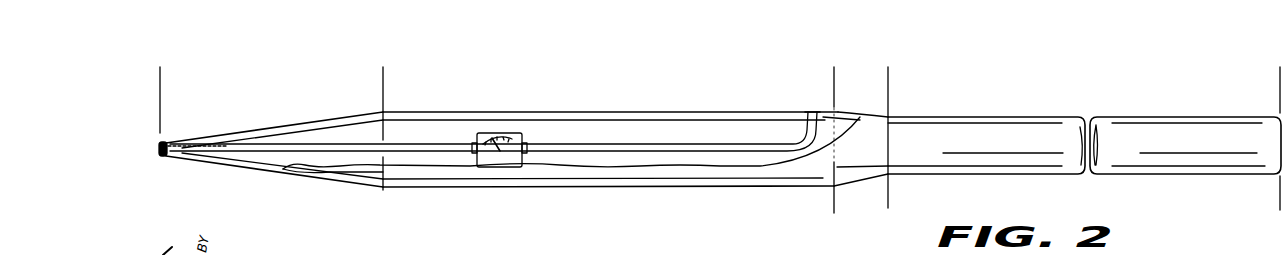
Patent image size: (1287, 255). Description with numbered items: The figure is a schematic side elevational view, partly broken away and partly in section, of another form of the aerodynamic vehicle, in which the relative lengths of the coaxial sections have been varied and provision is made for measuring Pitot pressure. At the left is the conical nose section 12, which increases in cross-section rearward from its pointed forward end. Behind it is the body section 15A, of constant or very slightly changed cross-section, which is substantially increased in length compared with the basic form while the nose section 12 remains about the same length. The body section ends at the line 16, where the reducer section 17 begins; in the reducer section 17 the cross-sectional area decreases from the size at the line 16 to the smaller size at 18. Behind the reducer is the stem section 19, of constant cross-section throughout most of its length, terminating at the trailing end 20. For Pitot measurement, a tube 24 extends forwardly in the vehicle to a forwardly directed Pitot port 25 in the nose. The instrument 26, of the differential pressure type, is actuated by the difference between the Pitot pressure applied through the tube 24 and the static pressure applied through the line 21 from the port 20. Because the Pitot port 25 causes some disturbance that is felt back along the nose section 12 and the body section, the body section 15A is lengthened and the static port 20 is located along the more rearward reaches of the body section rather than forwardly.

The nose section 12 is at (383, 69).
The body section 15A is at (833, 68).
The reducer section 17 is at (887, 67).
The stem section 19 is at (1280, 67).
The static pressure port 20 is at (815, 112).
The Pitot port 25 is at (158, 151).
The Pitot tube 24 is at (357, 152).
The differential pressure instrument 26 is at (507, 167).
The static pressure line 21 is at (692, 150).
The body section termination line 16 is at (833, 175).
The reducer section termination 18 is at (894, 148).